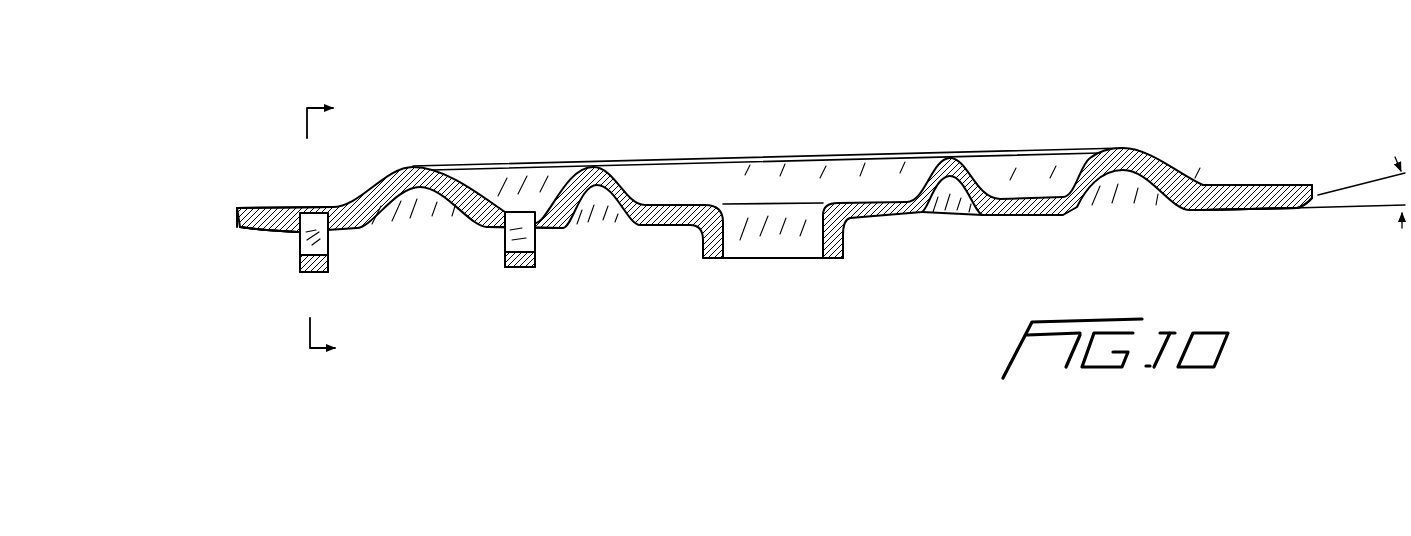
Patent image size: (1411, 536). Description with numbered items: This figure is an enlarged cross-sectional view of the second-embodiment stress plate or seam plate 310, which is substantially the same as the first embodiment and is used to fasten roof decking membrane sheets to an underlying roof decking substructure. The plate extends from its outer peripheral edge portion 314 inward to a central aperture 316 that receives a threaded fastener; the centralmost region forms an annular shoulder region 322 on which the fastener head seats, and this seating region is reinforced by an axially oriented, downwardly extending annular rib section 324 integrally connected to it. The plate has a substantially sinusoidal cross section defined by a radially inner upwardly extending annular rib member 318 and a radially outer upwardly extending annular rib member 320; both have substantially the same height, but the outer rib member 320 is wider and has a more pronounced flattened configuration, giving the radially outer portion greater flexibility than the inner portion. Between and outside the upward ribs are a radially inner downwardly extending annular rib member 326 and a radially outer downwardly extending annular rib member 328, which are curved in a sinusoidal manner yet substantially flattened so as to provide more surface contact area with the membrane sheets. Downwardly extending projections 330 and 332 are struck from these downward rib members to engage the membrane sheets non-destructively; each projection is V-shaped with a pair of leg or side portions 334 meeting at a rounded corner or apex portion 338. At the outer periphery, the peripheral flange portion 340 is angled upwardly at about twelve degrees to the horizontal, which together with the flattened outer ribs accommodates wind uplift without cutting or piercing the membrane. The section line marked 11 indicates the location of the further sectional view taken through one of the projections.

The stress plate or seam plate 310 is at (830, 85).
The outer peripheral edge portion 314 is at (235, 213).
The central aperture 316 is at (773, 260).
The radially inner upwardly extending annular rib member 318 is at (593, 165).
The radially outer upwardly extending annular rib member 320 is at (413, 165).
The annular shoulder region 322 is at (700, 203).
The axially oriented, downwardly extending annular rib section 324 is at (813, 256).
The radially inner downwardly extending annular rib member 326 is at (541, 229).
The radially outer downwardly extending annular rib member 328 is at (285, 233).
The downwardly extending projections 330 is at (530, 268).
The downwardly extending projections 332 is at (328, 273).
The leg or side portion 334 is at (303, 256).
The corner or apex portion 338 is at (328, 263).
The peripheral flange portion 340 is at (243, 228).
The section line 11- 11 is at (337, 230).